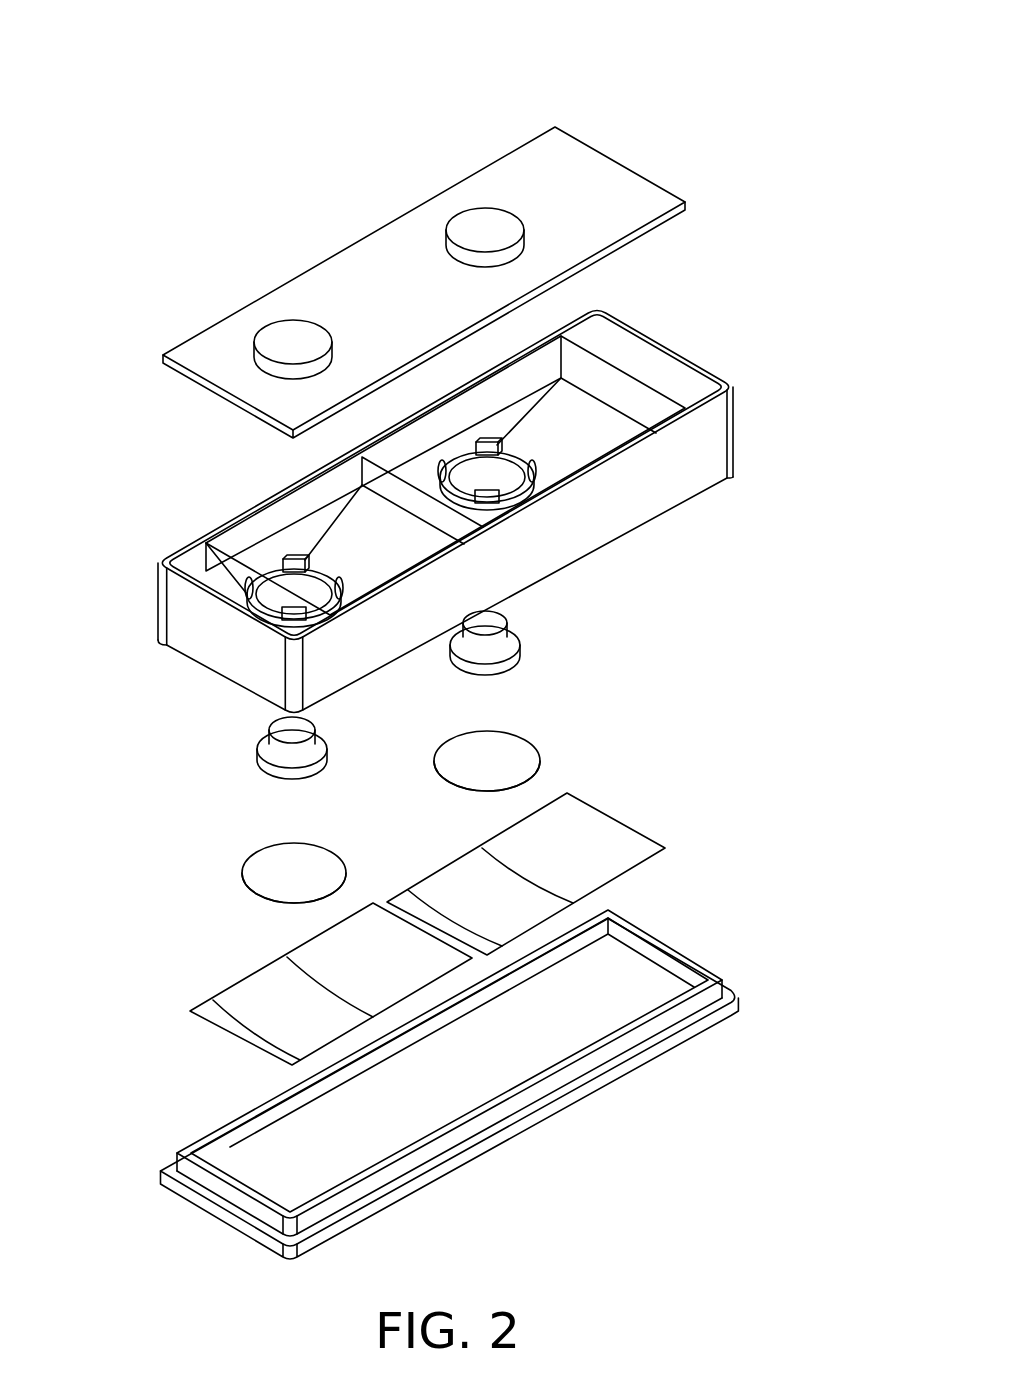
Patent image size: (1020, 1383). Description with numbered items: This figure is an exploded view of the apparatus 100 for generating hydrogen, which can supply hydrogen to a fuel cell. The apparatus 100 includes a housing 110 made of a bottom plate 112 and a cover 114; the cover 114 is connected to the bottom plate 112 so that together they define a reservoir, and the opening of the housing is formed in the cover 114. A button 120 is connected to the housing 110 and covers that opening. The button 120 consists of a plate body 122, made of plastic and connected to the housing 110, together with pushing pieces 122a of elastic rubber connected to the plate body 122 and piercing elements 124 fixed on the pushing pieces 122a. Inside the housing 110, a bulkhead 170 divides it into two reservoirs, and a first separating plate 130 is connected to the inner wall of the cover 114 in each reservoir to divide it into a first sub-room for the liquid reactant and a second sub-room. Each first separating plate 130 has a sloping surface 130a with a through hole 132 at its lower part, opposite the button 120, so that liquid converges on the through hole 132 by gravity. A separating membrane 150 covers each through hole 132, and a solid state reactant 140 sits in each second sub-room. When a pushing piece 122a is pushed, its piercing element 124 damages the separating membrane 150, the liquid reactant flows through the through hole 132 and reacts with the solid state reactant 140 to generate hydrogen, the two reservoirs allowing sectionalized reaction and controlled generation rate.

The apparatus for generating hydrogen 100 is at (879, 1039).
The housing 110 is at (453, 756).
The bottom plate 112 is at (653, 980).
The cover 114 is at (720, 437).
The button 120 is at (519, 89).
The plate body 122 is at (602, 182).
The pushing piece 122a is at (287, 333).
The piercing element 124 is at (473, 640).
The first separating plate 130 is at (410, 547).
The sloping surface 130a is at (564, 399).
The through hole 132 is at (267, 577).
The solid state reactant 140 is at (390, 968).
The separating membrane 150 is at (463, 768).
The bulkhead 170 is at (362, 482).